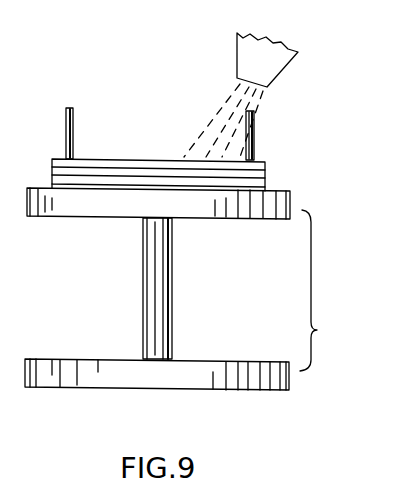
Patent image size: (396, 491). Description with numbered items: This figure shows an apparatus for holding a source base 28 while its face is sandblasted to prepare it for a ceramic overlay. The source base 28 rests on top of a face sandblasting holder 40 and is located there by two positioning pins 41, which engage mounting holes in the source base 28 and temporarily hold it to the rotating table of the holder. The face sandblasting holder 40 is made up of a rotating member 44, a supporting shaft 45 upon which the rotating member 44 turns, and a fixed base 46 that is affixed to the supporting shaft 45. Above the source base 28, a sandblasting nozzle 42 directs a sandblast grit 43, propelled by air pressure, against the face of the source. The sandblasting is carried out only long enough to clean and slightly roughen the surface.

The source base 28 is at (267, 165).
The face sandblasting holder 40 is at (329, 290).
The positioning pins 41 is at (255, 131).
The sandblasting nozzle 42 is at (288, 68).
The sandblast grit 43 is at (258, 104).
The rotating member 44 is at (291, 201).
The supporting shaft 45 is at (172, 286).
The fixed base 46 is at (290, 384).